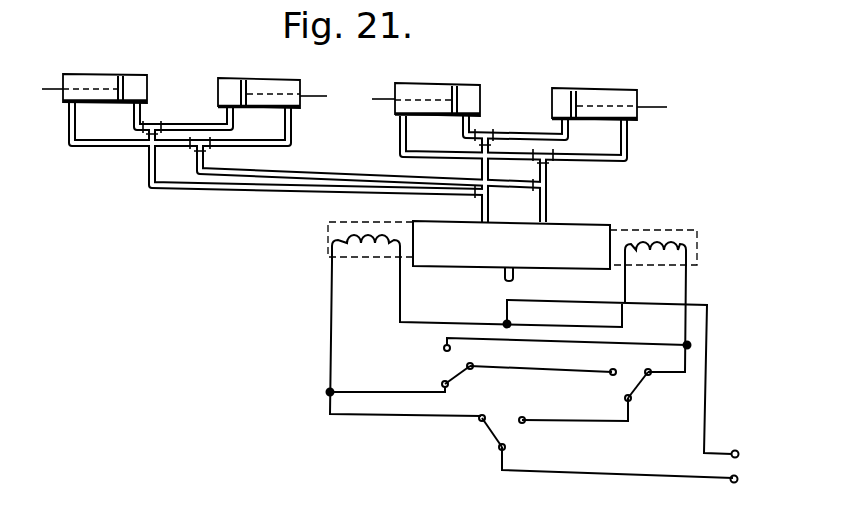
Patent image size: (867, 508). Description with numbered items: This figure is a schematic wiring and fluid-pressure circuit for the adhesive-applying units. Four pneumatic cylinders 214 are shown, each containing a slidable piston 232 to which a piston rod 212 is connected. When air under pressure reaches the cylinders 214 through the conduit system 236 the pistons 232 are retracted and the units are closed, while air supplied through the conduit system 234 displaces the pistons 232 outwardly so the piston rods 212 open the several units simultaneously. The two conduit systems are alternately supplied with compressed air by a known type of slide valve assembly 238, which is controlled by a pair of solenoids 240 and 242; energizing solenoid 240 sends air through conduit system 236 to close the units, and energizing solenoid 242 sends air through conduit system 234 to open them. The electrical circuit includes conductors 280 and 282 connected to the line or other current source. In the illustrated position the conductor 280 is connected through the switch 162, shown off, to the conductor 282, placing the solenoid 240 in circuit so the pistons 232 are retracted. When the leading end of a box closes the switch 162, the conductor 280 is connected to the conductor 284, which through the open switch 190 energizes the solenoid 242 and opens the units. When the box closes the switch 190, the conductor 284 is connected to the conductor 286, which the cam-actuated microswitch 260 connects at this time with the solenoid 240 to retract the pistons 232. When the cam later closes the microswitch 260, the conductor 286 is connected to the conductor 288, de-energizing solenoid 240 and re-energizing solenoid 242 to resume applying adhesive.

The pneumatic cylinder 214 is at (107, 57).
The piston 232 is at (122, 87).
The piston rod 212 is at (53, 92).
The conduit system 236 is at (118, 146).
The conduit system 234 is at (197, 186).
The slide valve assembly 238 is at (522, 253).
The solenoid 240 is at (328, 237).
The solenoid 242 is at (698, 252).
The microswitch 260 is at (440, 362).
The switch 162 is at (478, 434).
The switch 190 is at (647, 392).
The conductor 280 is at (712, 481).
The conductor 282 is at (707, 400).
The conductor 284 is at (607, 424).
The conductor 286 is at (570, 370).
The conductor 288 is at (567, 342).